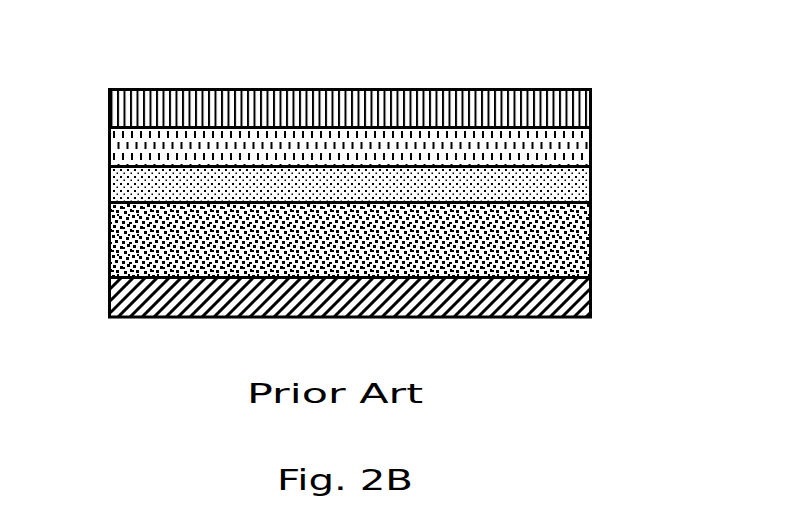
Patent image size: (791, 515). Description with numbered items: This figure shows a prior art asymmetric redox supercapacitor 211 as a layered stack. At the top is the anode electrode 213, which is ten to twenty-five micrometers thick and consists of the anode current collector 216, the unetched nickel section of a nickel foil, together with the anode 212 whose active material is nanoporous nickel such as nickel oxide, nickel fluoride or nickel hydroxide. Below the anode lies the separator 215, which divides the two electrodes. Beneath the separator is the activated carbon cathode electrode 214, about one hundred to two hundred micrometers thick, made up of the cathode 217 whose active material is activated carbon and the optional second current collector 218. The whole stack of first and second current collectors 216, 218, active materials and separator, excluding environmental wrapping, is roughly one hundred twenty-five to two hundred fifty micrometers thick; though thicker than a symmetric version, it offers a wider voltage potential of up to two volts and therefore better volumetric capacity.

The asymmetric redox supercapacitor 211 is at (381, 35).
The anode electrode 213 is at (100, 90).
The cathode electrode 214 is at (100, 203).
The anode current collector 216 is at (591, 108).
The anode 212 is at (591, 148).
The separator 215 is at (591, 186).
The cathode 217 is at (591, 232).
The second current collector 218 is at (591, 295).